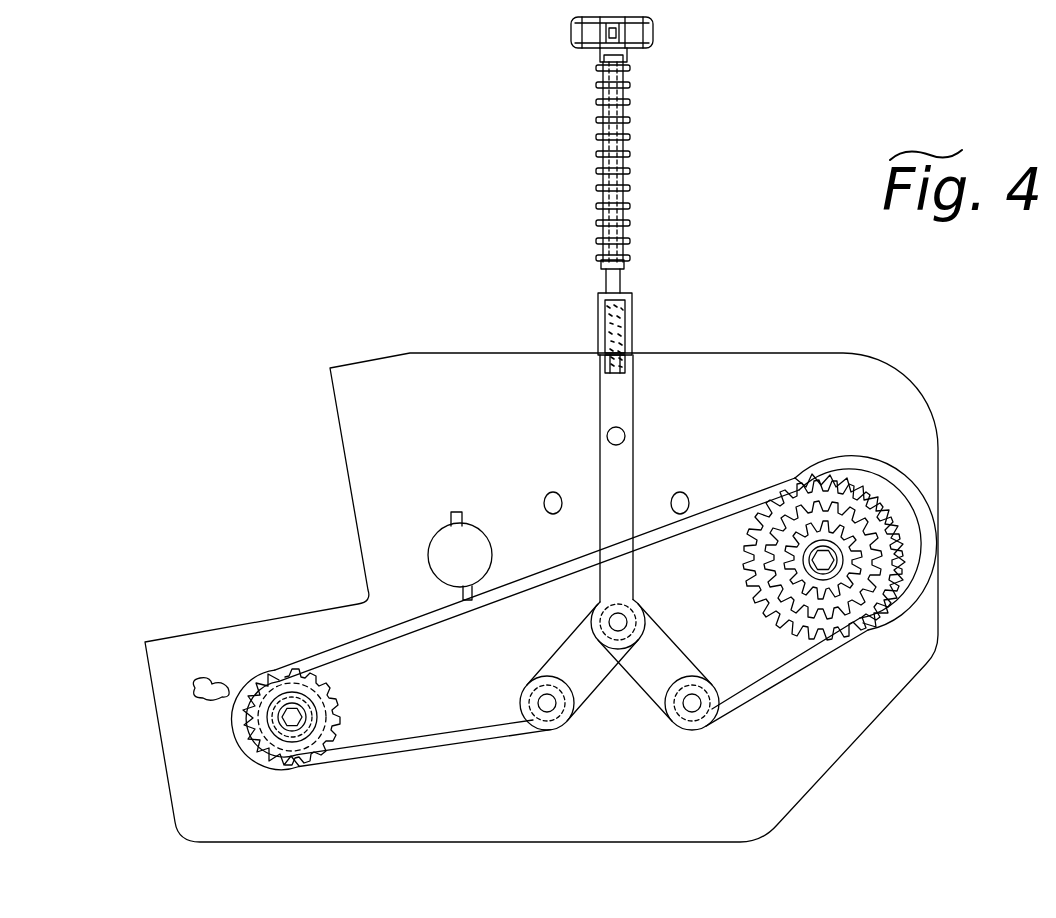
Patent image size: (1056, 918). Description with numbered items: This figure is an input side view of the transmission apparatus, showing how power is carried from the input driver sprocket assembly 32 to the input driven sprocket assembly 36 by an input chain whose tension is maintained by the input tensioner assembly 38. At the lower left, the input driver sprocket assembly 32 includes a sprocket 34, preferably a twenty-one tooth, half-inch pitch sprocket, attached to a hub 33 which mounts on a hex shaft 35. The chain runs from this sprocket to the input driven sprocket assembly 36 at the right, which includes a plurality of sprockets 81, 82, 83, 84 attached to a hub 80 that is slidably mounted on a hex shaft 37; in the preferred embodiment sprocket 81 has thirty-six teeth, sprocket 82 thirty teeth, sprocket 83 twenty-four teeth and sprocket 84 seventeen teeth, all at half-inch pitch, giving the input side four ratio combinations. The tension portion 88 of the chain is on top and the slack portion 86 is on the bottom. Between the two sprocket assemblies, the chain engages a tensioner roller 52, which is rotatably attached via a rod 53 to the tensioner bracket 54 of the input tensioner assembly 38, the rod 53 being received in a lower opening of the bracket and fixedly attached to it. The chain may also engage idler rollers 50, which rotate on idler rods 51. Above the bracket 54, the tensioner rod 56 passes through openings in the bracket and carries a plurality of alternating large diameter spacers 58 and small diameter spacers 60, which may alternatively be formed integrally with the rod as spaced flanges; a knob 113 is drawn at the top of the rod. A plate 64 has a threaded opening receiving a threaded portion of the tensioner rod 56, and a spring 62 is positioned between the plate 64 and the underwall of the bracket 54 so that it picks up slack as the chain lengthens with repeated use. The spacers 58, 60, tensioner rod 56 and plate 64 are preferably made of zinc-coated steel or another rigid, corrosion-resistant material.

The knob 113 is at (655, 33).
The large diameter spacers 58 is at (660, 162).
The small diameter spacers 60 is at (630, 163).
The tensioner rod 56 is at (618, 281).
The spring 62 is at (632, 299).
The plate 64 is at (628, 357).
The input tensioner assembly 38 is at (596, 317).
The tensioner bracket 54 is at (625, 462).
The rod 53 is at (608, 622).
The tensioner roller 52 is at (622, 655).
The slack portion 86 is at (652, 641).
The idler rods 51 is at (605, 716).
The idler rollers 50 is at (545, 728).
The tension portion 88 is at (557, 568).
The sprocket 34 is at (325, 690).
The hex shaft 35 is at (290, 717).
The input driver sprocket assembly 32 is at (314, 711).
The hub 33 is at (276, 745).
The input driven sprocket assembly 36 is at (571, 624).
The hex shaft 37 is at (823, 556).
The hub 80 is at (892, 497).
The sprocket 81 is at (862, 563).
The sprocket 82 is at (848, 638).
The sprocket 83 is at (872, 600).
The sprocket 84 is at (862, 520).